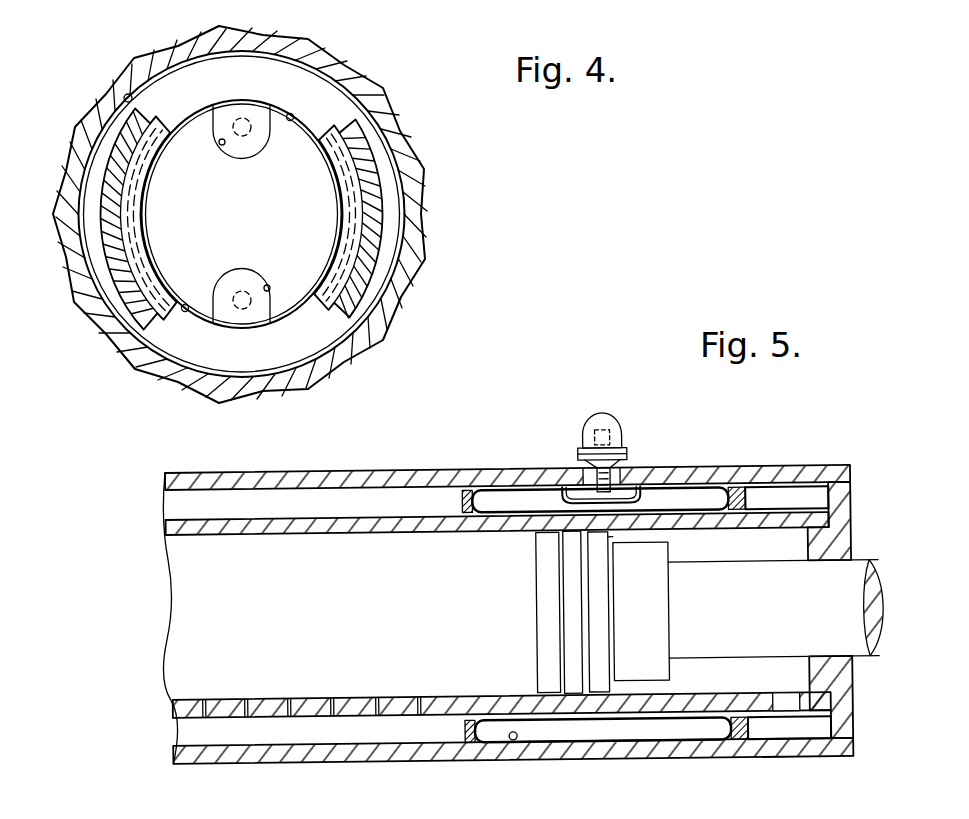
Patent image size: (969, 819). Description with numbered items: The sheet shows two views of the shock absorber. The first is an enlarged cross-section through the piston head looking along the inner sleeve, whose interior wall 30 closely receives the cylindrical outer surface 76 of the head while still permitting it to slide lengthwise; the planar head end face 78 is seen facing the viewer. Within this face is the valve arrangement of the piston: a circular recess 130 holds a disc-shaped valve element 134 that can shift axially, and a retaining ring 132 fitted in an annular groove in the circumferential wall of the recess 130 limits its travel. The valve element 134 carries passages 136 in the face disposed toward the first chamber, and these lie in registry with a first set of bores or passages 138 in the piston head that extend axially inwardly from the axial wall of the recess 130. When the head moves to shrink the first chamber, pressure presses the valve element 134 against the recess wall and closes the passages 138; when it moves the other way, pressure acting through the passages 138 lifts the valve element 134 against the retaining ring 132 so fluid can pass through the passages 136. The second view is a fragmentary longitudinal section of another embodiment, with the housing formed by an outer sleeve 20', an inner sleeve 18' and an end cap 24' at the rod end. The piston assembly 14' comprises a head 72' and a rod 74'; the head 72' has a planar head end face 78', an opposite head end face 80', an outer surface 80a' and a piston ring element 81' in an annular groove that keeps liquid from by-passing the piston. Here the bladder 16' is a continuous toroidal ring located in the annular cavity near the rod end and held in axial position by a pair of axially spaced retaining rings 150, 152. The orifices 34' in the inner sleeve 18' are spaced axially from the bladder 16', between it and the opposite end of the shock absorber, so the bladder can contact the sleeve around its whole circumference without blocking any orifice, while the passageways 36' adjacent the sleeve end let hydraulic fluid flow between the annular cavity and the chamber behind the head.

In FIG. 4, the cylindrical outer surface 76 is at (170, 62).
In FIG. 4, the head end face 78 is at (242, 213).
In FIG. 4, the interior wall 30 is at (124, 94).
In FIG. 4, the circular recess 130 is at (292, 115).
In FIG. 4, the retaining ring 132 is at (358, 182).
In FIG. 4, the disc-shaped valve element 134 is at (210, 231).
In FIG. 4, the passages 136 is at (222, 145).
In FIG. 4, the first set of bores or passages 138 is at (242, 136).
In FIG. 5, the outer sleeve 20' is at (477, 598).
In FIG. 5, the inner sleeve 18' is at (498, 615).
In FIG. 5, the orifices 34' is at (311, 683).
In FIG. 5, the piston assembly 14' is at (861, 520).
In FIG. 5, the end cap 24' is at (863, 696).
In FIG. 5, the bladder 16' is at (601, 606).
In FIG. 5, the retaining ring 150 is at (465, 735).
In FIG. 5, the retaining ring 152 is at (748, 742).
In FIG. 5, the passageways 36' is at (794, 609).
In FIG. 5, the head end face 78' is at (518, 612).
In FIG. 5, the head 72' is at (529, 612).
In FIG. 5, the piston ring element 81' is at (548, 612).
In FIG. 5, the head end face 80' is at (670, 608).
In FIG. 5, the outer surface 80a' is at (637, 565).
In FIG. 5, the rod 74' is at (800, 608).